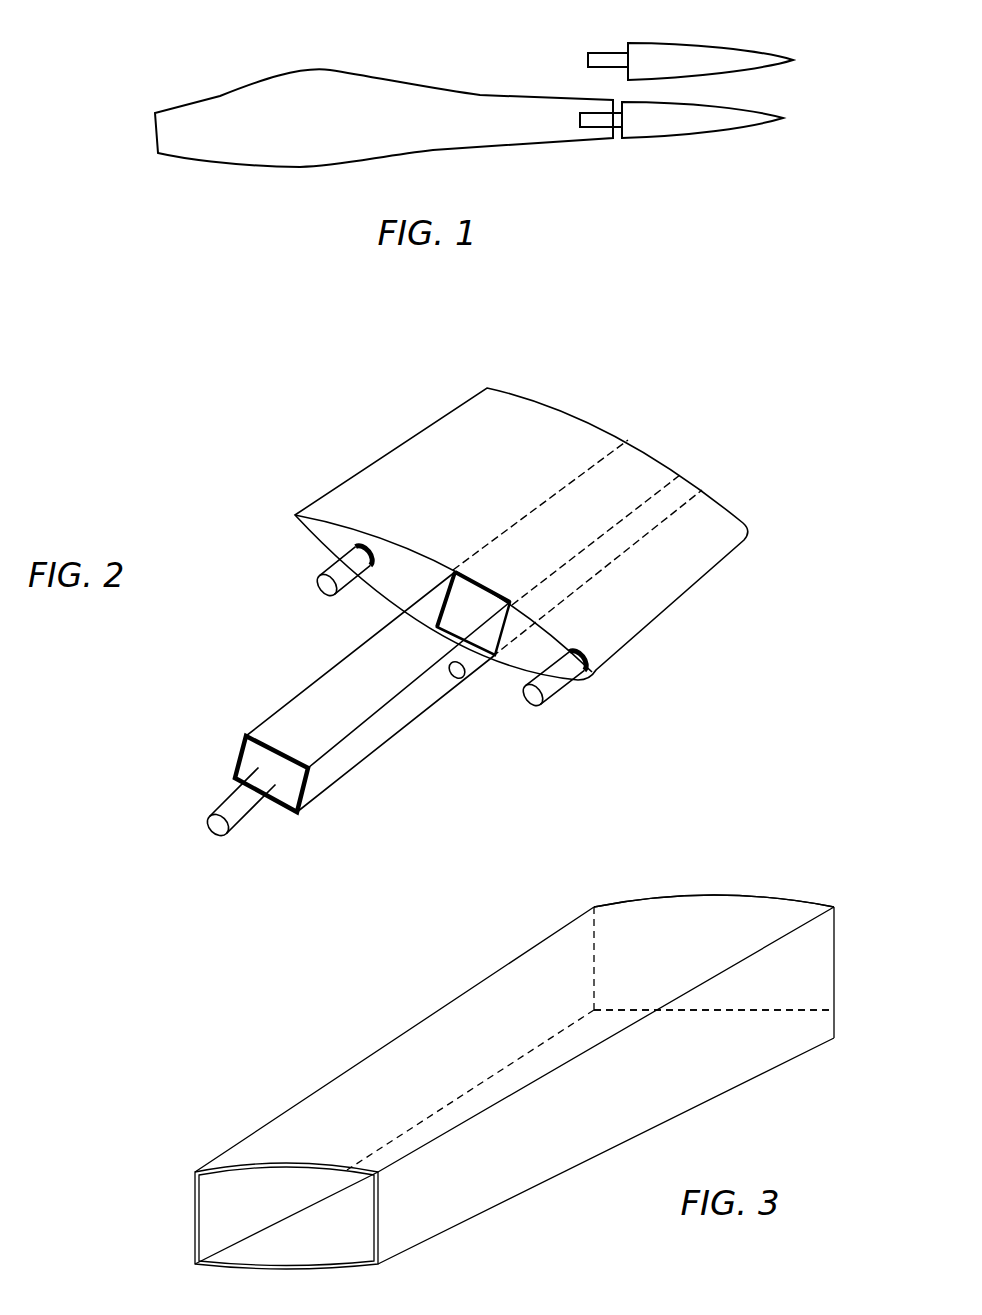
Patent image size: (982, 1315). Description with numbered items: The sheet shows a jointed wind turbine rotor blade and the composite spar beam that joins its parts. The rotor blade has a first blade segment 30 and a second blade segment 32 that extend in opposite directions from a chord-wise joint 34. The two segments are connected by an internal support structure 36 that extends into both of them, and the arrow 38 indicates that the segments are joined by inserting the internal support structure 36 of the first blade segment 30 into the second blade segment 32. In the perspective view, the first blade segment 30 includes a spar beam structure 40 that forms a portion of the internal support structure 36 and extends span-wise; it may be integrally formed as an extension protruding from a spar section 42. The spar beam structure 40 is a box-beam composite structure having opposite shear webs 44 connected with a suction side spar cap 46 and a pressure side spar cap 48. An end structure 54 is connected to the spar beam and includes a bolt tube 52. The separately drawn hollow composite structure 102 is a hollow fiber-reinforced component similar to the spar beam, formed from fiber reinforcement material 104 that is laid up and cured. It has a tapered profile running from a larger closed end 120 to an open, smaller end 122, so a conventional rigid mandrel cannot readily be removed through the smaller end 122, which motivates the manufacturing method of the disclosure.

In FIG. 1, the first blade segment 30 is at (712, 128).
In FIG. 2, the first blade segment 30 is at (412, 455).
In FIG. 1, the second blade segment 32 is at (228, 158).
In FIG. 1, the chord-wise joint 34 is at (617, 139).
In FIG. 2, the chord-wise joint 34 is at (320, 543).
In FIG. 1, the internal support structure 36 is at (602, 53).
In FIG. 2, the internal support structure 36 is at (388, 749).
In FIG. 1, the arrow 38 is at (712, 99).
In FIG. 2, the spar beam structure 40 is at (313, 703).
In FIG. 3, the spar beam structure 40 is at (352, 1095).
In FIG. 2, the spar section 42 is at (642, 470).
In FIG. 2, the shear webs 44 is at (427, 701).
In FIG. 2, the suction side spar cap 46 is at (447, 642).
In FIG. 2, the pressure side spar cap 48 is at (473, 590).
In FIG. 2, the bolt tube 52 is at (245, 823).
In FIG. 2, the end structure 54 is at (317, 811).
In FIG. 3, the hollow composite structure 102 is at (839, 848).
In FIG. 3, the fiber reinforcement material 104 is at (460, 1028).
In FIG. 3, the closed end 120 is at (683, 895).
In FIG. 3, the open smaller end 122 is at (211, 1215).